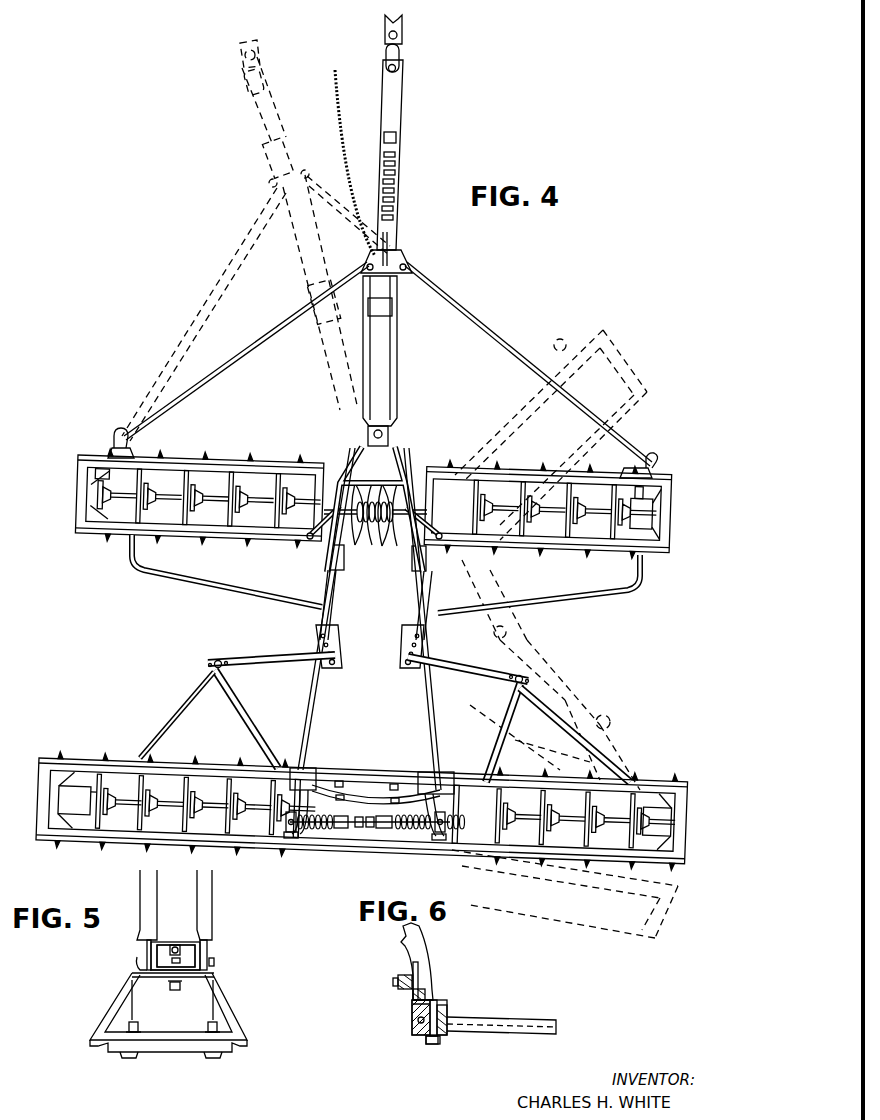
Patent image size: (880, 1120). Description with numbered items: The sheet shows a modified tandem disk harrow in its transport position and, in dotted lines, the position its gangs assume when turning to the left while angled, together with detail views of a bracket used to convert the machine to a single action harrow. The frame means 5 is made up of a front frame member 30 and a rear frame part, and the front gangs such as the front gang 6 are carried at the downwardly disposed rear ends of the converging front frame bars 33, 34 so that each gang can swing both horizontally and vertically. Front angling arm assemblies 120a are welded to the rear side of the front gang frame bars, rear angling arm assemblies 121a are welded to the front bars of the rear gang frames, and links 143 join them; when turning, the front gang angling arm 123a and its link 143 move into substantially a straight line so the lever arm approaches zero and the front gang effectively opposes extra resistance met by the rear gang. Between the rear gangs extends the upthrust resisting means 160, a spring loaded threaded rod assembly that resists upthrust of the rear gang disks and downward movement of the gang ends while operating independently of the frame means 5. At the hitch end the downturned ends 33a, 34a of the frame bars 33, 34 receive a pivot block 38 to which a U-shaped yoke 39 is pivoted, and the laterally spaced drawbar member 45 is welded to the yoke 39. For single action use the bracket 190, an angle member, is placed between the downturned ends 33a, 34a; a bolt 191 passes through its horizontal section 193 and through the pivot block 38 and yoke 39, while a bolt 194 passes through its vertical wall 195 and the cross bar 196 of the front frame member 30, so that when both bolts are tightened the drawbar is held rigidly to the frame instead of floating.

In FIG. 4, the front frame member 30 is at (410, 448).
In FIG. 4, the angling arm assemblies 120a is at (575, 605).
In FIG. 4, the rear angling arm assemblies 121a is at (605, 730).
In FIG. 4, the cross bar 196 is at (365, 462).
In FIG. 5, the cross bar 196 is at (192, 982).
In FIG. 6, the cross bar 196 is at (410, 993).
In FIG. 4, the front gang angling arm 123a is at (310, 572).
In FIG. 4, the links 143 is at (263, 660).
In FIG. 4, the frame means 5 is at (294, 684).
In FIG. 4, the upthrust resisting means 160 is at (347, 829).
In FIG. 4, the front gang 6 is at (178, 900).
In FIG. 5, the front gang 6 is at (175, 870).
In FIG. 5, the front frame bar 33 is at (130, 990).
In FIG. 6, the front frame bar 33 is at (420, 952).
In FIG. 5, the front frame bar 34 is at (228, 1002).
In FIG. 5, the downturned end 33a is at (148, 950).
In FIG. 6, the downturned end 33a is at (413, 969).
In FIG. 5, the downturned end 34a is at (208, 957).
In FIG. 5, the bracket 190 is at (206, 950).
In FIG. 6, the bracket 190 is at (438, 992).
In FIG. 5, the bolt 191 is at (175, 944).
In FIG. 6, the bolt 191 is at (436, 1005).
In FIG. 5, the horizontal section 193 is at (190, 944).
In FIG. 6, the horizontal section 193 is at (448, 1013).
In FIG. 5, the bolt 194 is at (175, 990).
In FIG. 6, the bolt 194 is at (397, 982).
In FIG. 5, the vertical wall 195 is at (150, 968).
In FIG. 6, the vertical wall 195 is at (414, 1002).
In FIG. 6, the pivot block 38 is at (412, 1028).
In FIG. 6, the yoke 39 is at (442, 1034).
In FIG. 6, the drawbar member 45 is at (536, 1021).